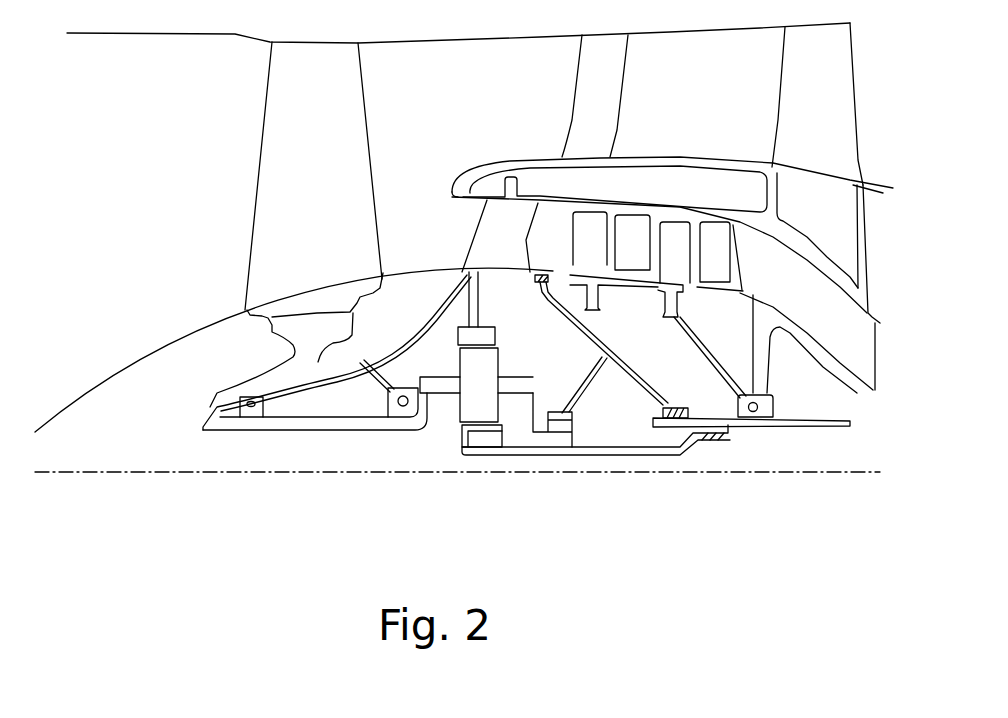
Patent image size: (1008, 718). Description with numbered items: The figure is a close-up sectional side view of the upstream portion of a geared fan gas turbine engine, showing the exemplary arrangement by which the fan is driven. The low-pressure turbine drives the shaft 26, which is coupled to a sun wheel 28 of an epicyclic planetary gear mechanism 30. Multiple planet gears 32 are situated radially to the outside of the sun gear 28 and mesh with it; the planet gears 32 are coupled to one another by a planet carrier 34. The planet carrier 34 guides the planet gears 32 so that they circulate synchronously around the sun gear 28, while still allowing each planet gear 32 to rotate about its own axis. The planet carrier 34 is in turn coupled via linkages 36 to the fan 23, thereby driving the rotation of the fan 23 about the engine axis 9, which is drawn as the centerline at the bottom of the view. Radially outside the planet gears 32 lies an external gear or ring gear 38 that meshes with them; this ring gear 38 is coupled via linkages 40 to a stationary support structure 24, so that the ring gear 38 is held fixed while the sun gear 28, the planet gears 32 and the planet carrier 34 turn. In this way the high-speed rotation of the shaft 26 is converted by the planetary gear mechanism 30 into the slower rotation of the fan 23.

The engine axis 9 is at (237, 472).
The fan 23 is at (277, 178).
The stationary support structure 24 is at (487, 233).
The shaft 26 is at (637, 453).
The sun wheel 28 is at (483, 438).
The epicyclic planetary gear mechanism 30 is at (430, 408).
The planet gears 32 is at (465, 407).
The planet carrier 34 is at (523, 427).
The linkages 36 is at (417, 440).
The ring gear 38 is at (460, 335).
The linkages 40 is at (482, 312).